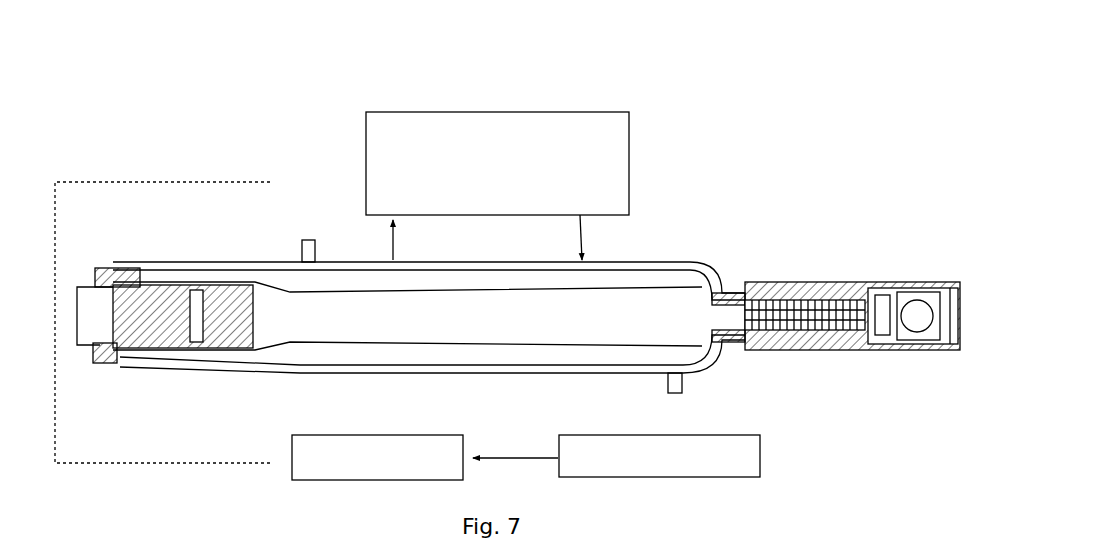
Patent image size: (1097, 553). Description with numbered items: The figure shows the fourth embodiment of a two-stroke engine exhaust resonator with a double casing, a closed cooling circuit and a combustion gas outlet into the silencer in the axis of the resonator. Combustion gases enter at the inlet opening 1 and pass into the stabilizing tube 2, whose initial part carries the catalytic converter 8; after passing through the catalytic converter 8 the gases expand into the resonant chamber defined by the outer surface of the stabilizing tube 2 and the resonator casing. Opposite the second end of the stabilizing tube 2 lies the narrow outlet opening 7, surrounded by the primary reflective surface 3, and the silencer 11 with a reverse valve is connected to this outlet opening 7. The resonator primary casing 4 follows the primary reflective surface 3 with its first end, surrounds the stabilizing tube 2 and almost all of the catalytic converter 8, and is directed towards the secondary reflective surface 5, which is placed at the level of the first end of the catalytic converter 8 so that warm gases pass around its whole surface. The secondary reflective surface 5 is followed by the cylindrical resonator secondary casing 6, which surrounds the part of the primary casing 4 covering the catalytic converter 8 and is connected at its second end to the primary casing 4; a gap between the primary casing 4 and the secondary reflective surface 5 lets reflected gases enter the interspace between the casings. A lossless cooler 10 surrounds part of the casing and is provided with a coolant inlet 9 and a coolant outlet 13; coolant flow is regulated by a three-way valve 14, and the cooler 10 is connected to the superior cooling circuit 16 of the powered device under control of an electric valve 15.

The inlet opening 1 is at (78, 347).
The stabilizing tube 2 is at (528, 352).
The primary reflective surface 3 is at (731, 360).
The resonator primary casing 4 is at (632, 262).
The secondary reflective surface 5 is at (113, 276).
The resonator secondary casing 6 is at (178, 262).
The outlet opening 7 is at (738, 298).
The catalytic converter 8 is at (162, 347).
The coolant inlet 9 is at (306, 238).
The cooler 10 is at (338, 376).
The silencer 11 is at (855, 276).
The coolant outlet 13 is at (493, 70).
The three-way valve 14 is at (497, 186).
The electric valve 15 is at (659, 456).
The superior cooling circuit 16 is at (425, 457).